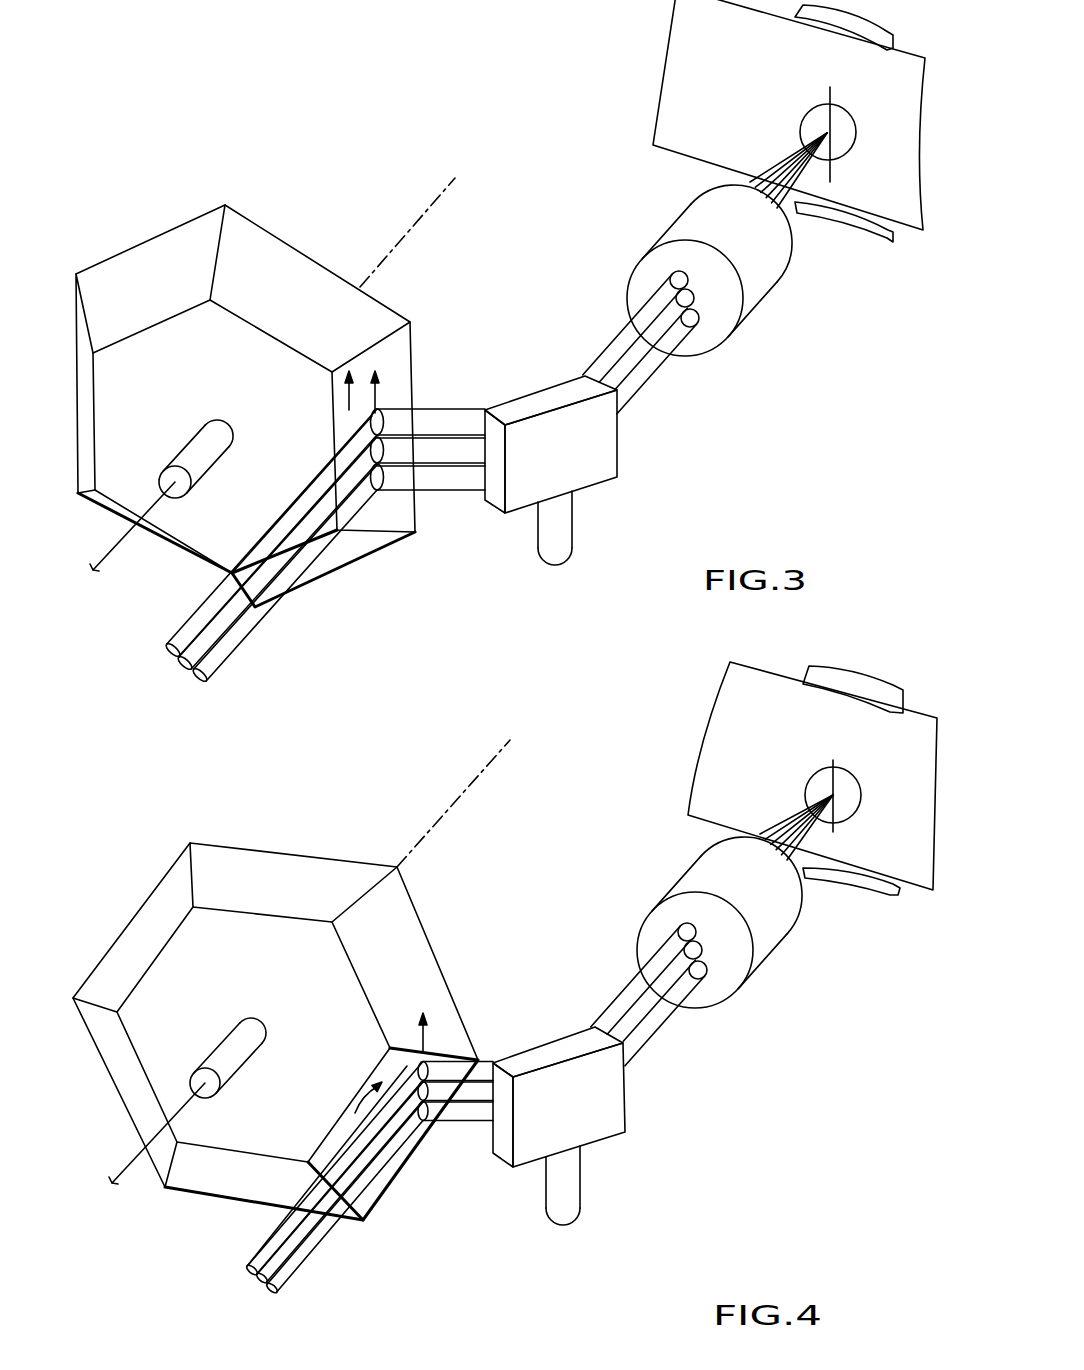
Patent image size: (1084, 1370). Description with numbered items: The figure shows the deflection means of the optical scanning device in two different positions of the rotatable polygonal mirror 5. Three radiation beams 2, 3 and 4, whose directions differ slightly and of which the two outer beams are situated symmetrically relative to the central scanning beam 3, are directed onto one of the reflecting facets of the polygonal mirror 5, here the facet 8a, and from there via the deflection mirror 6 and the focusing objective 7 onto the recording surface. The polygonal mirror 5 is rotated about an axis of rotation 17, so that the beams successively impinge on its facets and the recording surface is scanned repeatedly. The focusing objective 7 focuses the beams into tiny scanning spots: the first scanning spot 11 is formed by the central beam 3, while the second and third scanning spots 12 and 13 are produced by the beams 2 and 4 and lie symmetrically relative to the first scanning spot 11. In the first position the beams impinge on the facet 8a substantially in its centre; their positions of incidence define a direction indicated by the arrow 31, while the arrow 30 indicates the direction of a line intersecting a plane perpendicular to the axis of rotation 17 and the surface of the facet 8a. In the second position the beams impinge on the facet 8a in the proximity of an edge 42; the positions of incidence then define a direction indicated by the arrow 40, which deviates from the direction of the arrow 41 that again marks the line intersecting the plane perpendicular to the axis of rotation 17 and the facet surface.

In FIG. 3, the radiation beam 2 is at (165, 651).
In FIG. 4, the radiation beam 2 is at (244, 1270).
In FIG. 3, the central scanning beam 3 is at (177, 664).
In FIG. 4, the central scanning beam 3 is at (256, 1287).
In FIG. 3, the radiation beam 4 is at (195, 681).
In FIG. 4, the radiation beam 4 is at (270, 1300).
In FIG. 3, the rotatable polygonal mirror 5 is at (160, 377).
In FIG. 4, the rotatable polygonal mirror 5 is at (153, 922).
In FIG. 3, the deflection mirror 6 is at (608, 460).
In FIG. 4, the deflection mirror 6 is at (610, 1110).
In FIG. 3, the focusing objective 7 is at (757, 293).
In FIG. 4, the focusing objective 7 is at (775, 933).
In FIG. 3, the reflecting facet 8a is at (413, 508).
In FIG. 4, the reflecting facet 8a is at (380, 1188).
In FIG. 3, the first scanning spot 11 is at (840, 130).
In FIG. 4, the first scanning spot 11 is at (835, 797).
In FIG. 3, the second scanning spot 12 is at (840, 112).
In FIG. 4, the second scanning spot 12 is at (842, 783).
In FIG. 3, the third scanning spot 13 is at (840, 153).
In FIG. 4, the third scanning spot 13 is at (840, 807).
In FIG. 3, the axis of rotation 17 is at (161, 507).
In FIG. 4, the axis of rotation 17 is at (186, 1120).
In FIG. 3, the arrow 30 is at (347, 398).
In FIG. 3, the arrow 31 is at (378, 393).
In FIG. 4, the arrow 40 is at (422, 1036).
In FIG. 4, the arrow 41 is at (362, 1103).
In FIG. 4, the edge 42 is at (453, 1053).